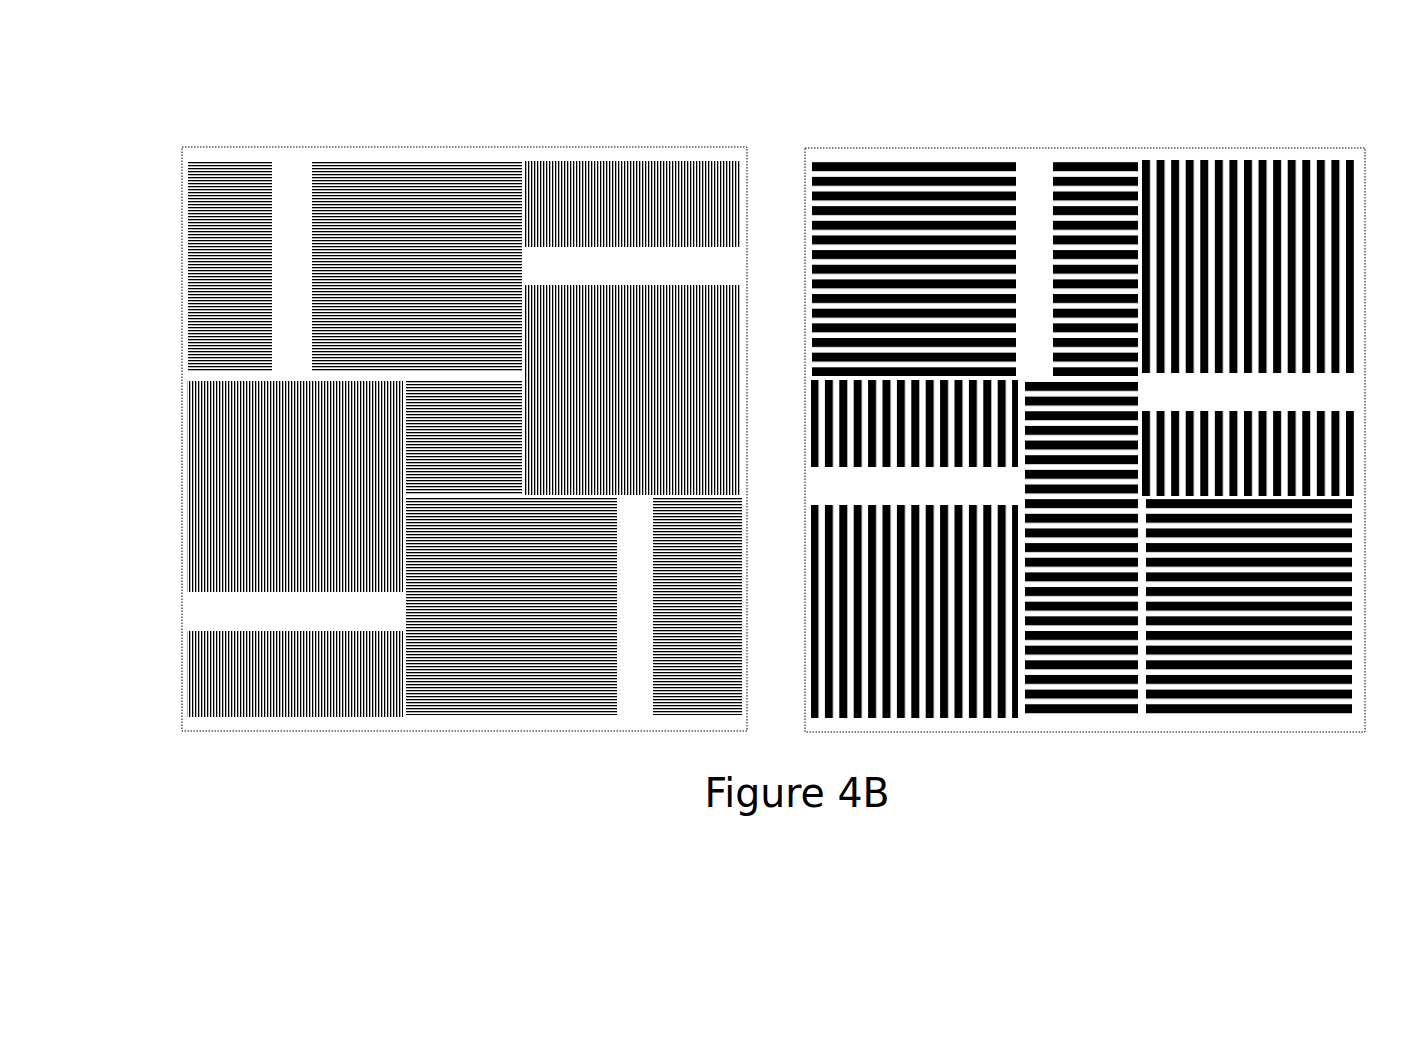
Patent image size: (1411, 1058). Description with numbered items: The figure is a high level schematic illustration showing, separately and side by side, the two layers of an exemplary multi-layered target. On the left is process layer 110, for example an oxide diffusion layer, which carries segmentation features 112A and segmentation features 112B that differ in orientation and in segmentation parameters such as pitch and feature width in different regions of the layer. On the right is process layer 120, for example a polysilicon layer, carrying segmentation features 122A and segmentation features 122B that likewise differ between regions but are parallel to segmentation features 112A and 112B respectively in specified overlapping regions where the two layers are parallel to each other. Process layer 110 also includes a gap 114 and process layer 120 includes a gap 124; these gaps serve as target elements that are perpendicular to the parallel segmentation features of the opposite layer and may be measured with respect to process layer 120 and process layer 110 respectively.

The process layer 110 is at (313, 46).
The segmentation features 112A is at (204, 158).
The gap 114 is at (293, 167).
The segmentation features 112B is at (616, 162).
The process layer 120 is at (967, 56).
The segmentation features 122A is at (866, 163).
The gap 124 is at (1030, 163).
The segmentation features 122B is at (1248, 163).